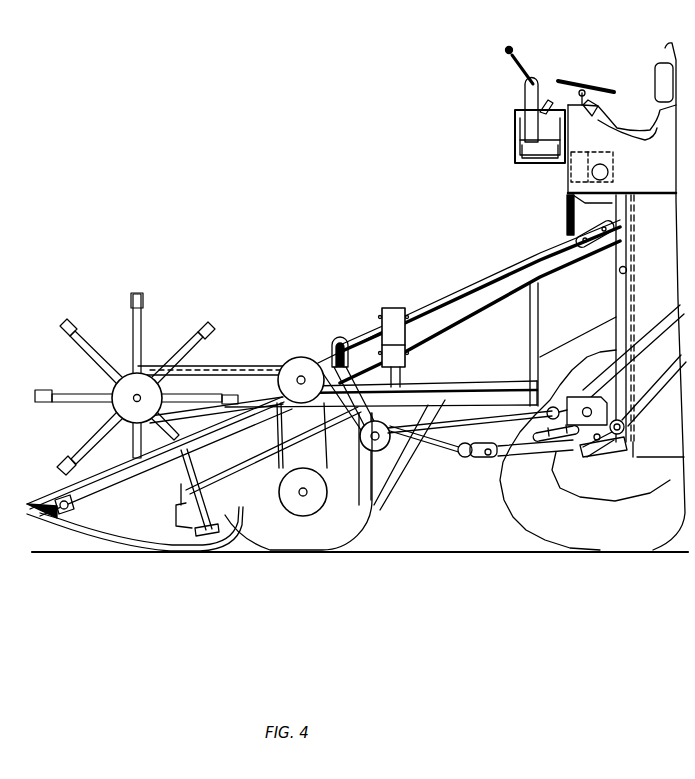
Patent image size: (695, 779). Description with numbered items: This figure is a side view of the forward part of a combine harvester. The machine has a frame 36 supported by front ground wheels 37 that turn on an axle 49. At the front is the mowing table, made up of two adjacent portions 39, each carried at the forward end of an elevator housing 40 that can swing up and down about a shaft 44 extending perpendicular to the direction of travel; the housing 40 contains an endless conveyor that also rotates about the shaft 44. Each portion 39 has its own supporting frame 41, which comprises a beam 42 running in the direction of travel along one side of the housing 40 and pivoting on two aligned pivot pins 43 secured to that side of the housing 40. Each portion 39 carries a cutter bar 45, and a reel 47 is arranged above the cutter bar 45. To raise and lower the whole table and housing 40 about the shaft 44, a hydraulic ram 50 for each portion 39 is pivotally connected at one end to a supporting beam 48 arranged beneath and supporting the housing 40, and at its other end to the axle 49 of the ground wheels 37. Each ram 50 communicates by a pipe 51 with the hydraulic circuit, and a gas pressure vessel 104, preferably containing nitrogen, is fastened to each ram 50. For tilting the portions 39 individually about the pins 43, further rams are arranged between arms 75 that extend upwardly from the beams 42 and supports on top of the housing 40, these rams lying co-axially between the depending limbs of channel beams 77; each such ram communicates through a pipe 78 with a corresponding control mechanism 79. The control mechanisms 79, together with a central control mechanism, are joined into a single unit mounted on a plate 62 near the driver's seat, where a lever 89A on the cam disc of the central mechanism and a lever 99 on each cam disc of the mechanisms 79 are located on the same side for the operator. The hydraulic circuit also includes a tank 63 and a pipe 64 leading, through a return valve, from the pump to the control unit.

The lever 89A is at (514, 50).
The lever 99 is at (527, 72).
The pipe 64 is at (520, 117).
The control mechanism 79 is at (520, 139).
The plate 62 is at (537, 166).
The tank 63 is at (612, 178).
The gas pressure vessel 104 is at (524, 433).
The pipe 78 is at (502, 274).
The elevator housing 40 is at (473, 318).
The channel beam 77 is at (395, 308).
The shaft 44 is at (619, 272).
The pivot pin 43 is at (545, 382).
The beam 42 is at (495, 384).
The supporting frame 41 is at (443, 383).
The arm 75 is at (409, 375).
The reel 47 is at (143, 308).
The cutter bar 45 is at (160, 540).
The portion 39 is at (267, 552).
The front ground wheel 37 is at (547, 518).
The frame 36 is at (653, 456).
The pipe 51 is at (608, 455).
The adjusting cylinder or hydraulic ram 50 is at (528, 458).
The supporting beam 48 is at (464, 458).
The axle 49 is at (630, 421).